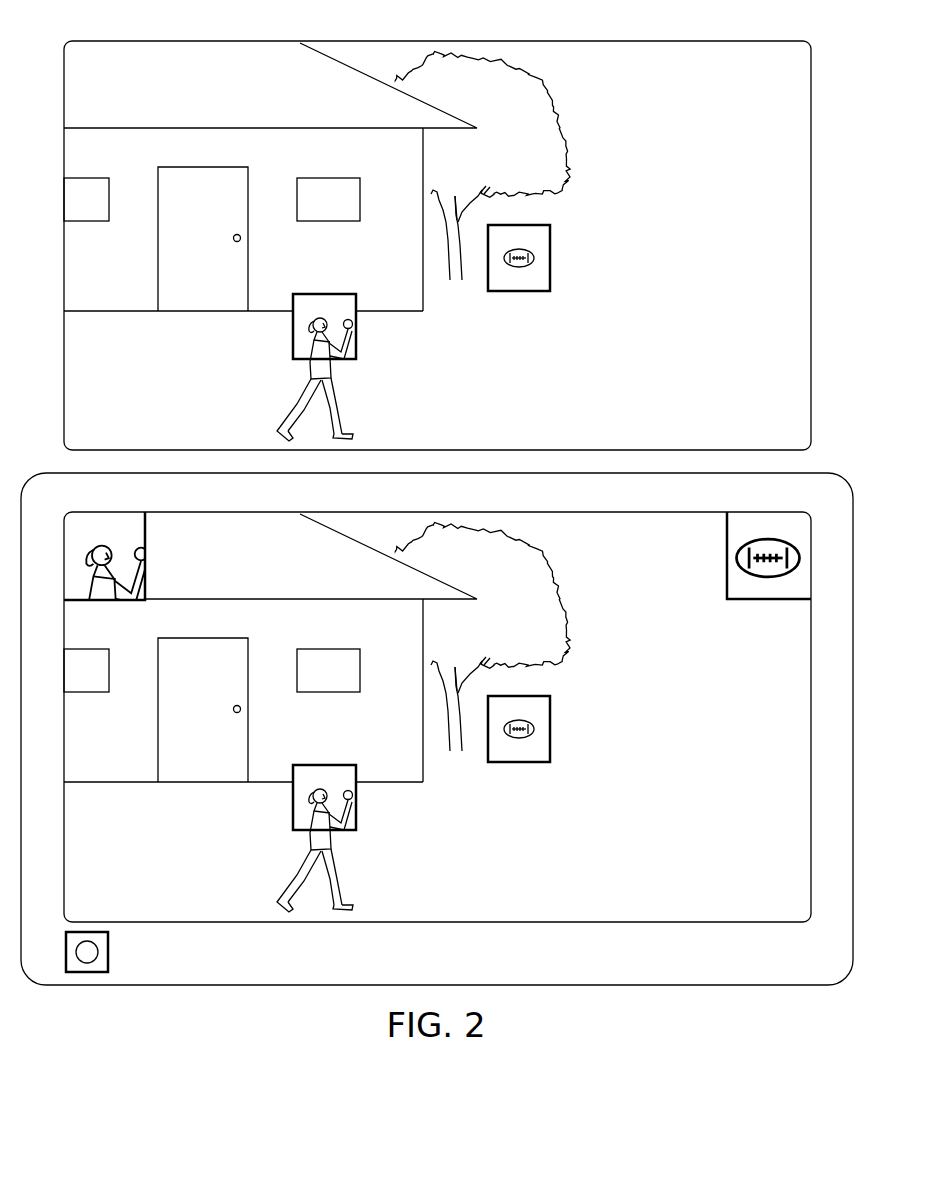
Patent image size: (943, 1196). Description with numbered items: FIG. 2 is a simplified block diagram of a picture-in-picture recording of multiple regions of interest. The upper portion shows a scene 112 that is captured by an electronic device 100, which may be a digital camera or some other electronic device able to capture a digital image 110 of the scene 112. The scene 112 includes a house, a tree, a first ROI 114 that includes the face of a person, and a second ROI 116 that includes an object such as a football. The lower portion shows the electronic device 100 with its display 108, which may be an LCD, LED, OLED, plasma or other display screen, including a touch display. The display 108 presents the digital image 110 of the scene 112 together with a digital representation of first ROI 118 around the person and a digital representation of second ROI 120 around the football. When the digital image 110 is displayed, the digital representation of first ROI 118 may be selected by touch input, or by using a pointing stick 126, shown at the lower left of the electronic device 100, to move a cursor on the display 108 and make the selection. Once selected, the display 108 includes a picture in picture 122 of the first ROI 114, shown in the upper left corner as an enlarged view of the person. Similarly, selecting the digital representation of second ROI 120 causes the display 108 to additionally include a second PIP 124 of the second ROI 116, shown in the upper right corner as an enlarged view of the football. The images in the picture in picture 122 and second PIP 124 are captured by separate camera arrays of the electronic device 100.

The electronic device 100 is at (294, 997).
The display 108 is at (643, 741).
The digital image 110 is at (680, 850).
The scene 112 is at (705, 110).
The first ROI 114 is at (322, 293).
The second ROI 116 is at (518, 293).
The digital representation of first ROI 118 is at (322, 764).
The digital representation of second ROI 120 is at (518, 764).
The picture in picture (PIP) 122 is at (147, 556).
The second PIP 124 is at (768, 601).
The pointing stick 126 is at (110, 950).